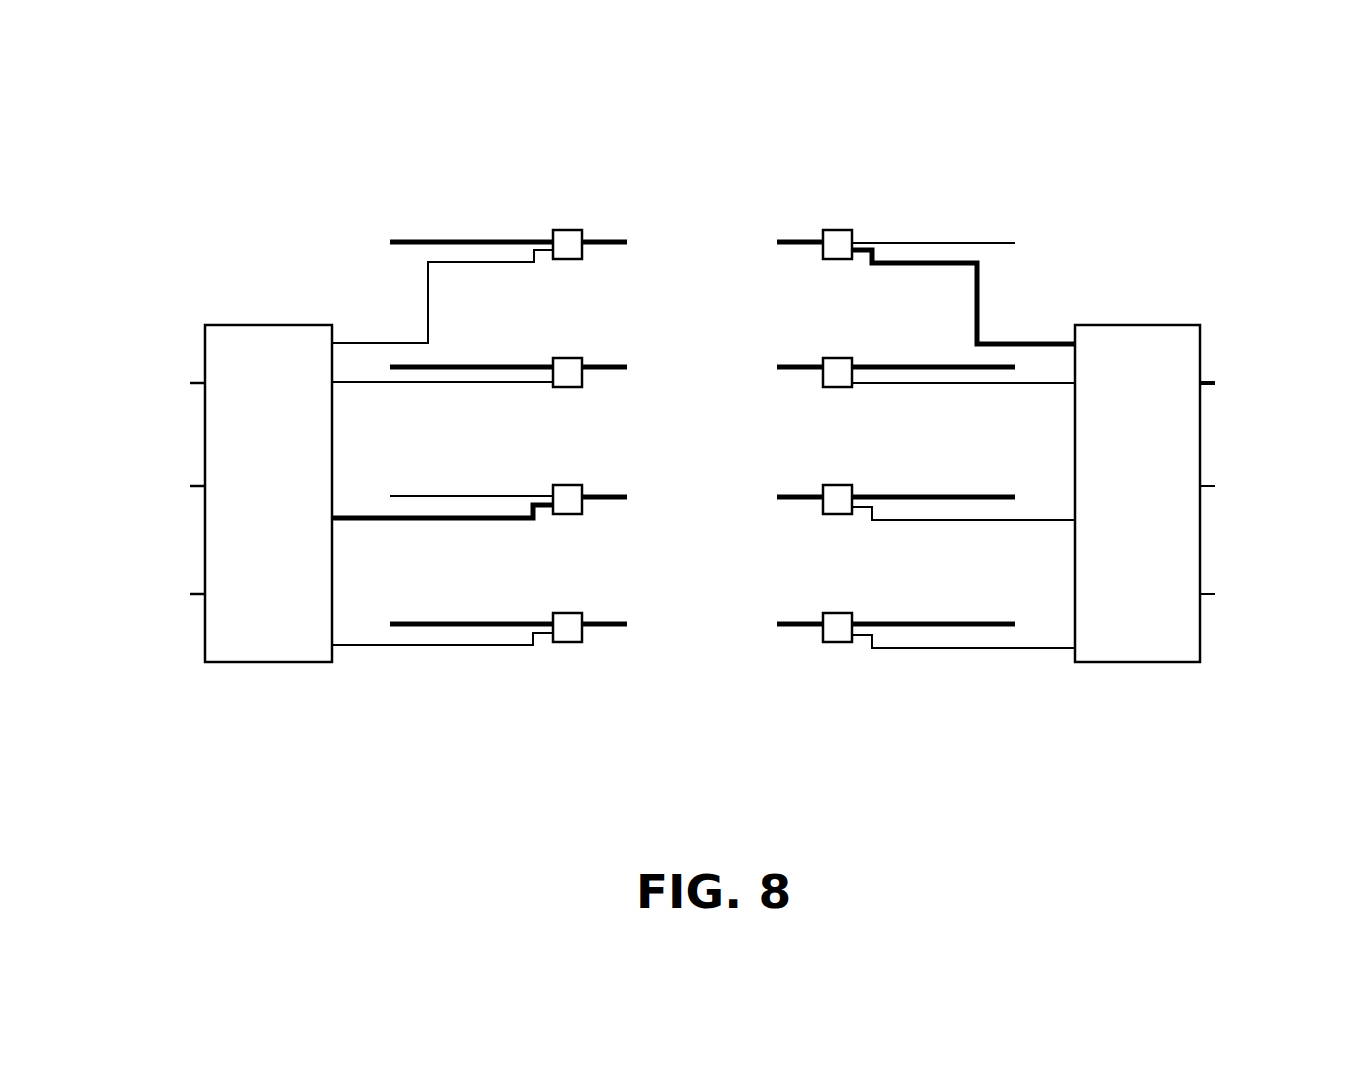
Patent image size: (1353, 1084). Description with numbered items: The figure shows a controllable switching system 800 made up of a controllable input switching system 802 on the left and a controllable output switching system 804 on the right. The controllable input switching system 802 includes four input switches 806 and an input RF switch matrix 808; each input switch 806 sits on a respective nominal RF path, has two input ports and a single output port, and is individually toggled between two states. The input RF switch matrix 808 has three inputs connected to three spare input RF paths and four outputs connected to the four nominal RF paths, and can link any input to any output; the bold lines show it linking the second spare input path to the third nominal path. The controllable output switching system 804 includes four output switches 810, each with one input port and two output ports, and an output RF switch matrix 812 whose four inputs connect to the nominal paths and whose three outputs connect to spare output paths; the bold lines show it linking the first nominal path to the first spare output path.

The controllable switching system 800 is at (190, 132).
The controllable input switching system 802 is at (336, 178).
The controllable output switching system 804 is at (1050, 178).
The input switch 806 is at (568, 645).
The input RF switch matrix 808 is at (245, 493).
The output switch 810 is at (838, 645).
The output RF switch matrix 812 is at (1160, 493).